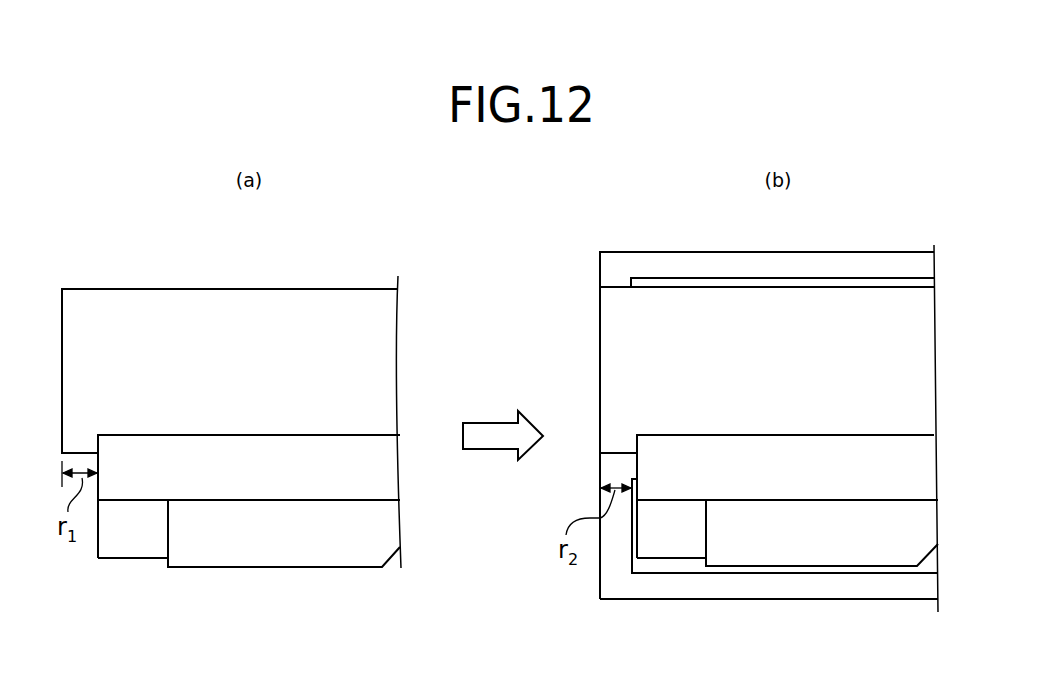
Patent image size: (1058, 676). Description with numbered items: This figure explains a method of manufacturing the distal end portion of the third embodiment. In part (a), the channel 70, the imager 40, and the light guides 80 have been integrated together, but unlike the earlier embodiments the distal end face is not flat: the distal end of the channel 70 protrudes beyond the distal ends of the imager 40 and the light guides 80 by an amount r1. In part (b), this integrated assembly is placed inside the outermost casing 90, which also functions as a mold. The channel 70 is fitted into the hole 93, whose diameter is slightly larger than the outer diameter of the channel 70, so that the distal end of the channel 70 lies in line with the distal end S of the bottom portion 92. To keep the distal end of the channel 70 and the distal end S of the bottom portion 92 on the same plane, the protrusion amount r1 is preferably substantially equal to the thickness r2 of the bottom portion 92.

The channel 70 is at (186, 312).
The light guides 80 is at (357, 470).
The imager 40 is at (263, 540).
The outermost casing 90 is at (877, 265).
The hole 93 is at (600, 287).
The bottom portion 92 is at (600, 496).
The distal end of the bottom portion S is at (600, 262).